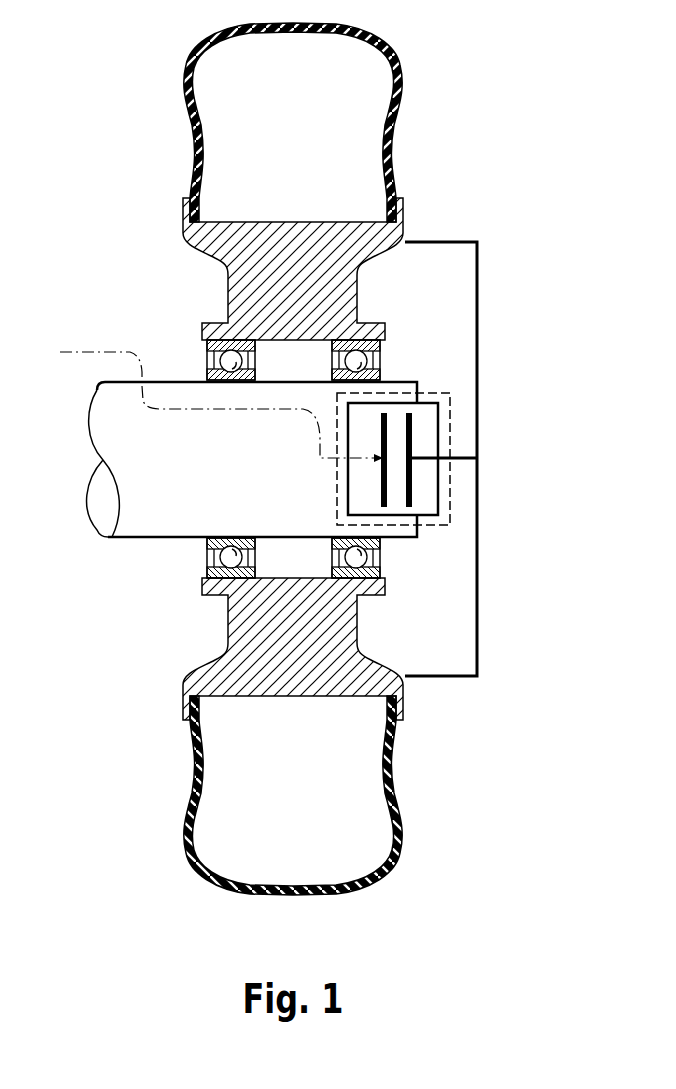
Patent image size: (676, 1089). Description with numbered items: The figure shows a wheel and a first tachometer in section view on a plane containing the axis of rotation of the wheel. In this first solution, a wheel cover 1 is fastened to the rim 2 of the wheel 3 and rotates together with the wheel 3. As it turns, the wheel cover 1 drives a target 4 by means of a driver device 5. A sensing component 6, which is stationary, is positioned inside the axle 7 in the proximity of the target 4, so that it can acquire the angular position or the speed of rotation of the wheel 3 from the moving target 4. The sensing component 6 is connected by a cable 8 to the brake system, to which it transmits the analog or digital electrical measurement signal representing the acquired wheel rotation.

The wheel cover 1 is at (477, 403).
The rim 2 is at (345, 285).
The wheel 3 is at (436, 172).
The target 4 is at (412, 490).
The driver device 5 is at (462, 463).
The sensing component 6 is at (381, 488).
The axle 7 is at (168, 380).
The cable 8 is at (213, 412).